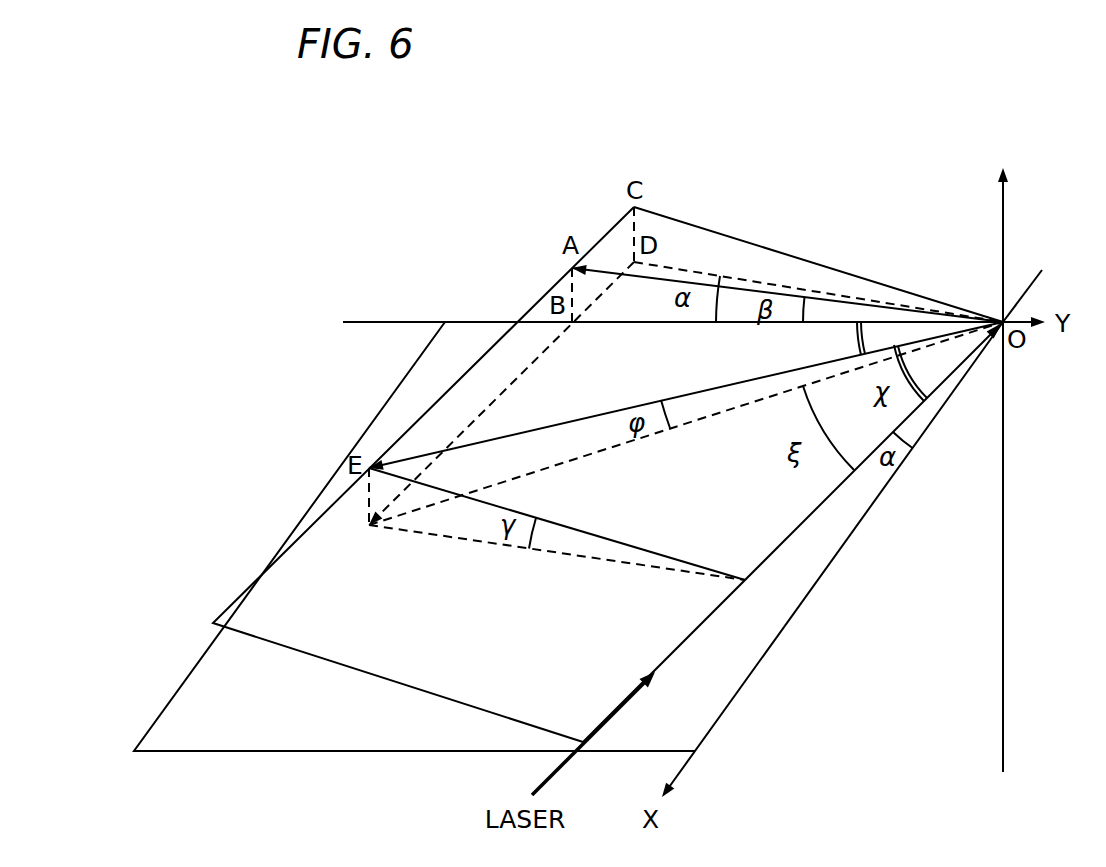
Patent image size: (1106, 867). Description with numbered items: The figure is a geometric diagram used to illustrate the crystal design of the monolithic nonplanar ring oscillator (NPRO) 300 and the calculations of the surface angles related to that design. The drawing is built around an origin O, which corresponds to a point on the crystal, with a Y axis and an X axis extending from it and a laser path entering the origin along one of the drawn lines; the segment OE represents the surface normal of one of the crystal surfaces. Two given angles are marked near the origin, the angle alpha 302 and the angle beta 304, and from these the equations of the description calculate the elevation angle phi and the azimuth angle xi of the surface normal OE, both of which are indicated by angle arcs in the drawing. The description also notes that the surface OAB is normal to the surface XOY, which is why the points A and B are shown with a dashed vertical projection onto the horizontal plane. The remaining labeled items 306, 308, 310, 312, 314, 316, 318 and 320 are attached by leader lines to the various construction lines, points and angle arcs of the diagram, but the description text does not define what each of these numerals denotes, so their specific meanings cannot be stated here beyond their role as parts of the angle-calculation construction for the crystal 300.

The monolithic nonplanar ring oscillator (NPRO) 300 is at (392, 185).
The angle α 302 is at (882, 473).
The angle β 304 is at (780, 307).
The line from point E to laser incidence point 306 is at (492, 532).
The point A on tilted plane 308 is at (558, 243).
The point B projection on Y axis 310 is at (550, 307).
The point C vertex of tilted plane 312 is at (620, 180).
The edge of tilted plane from C to O 314 is at (662, 238).
The incident laser beam line 316 is at (892, 398).
The line from point E to origin O 318 is at (627, 410).
The projected line from point F to origin O 320 is at (780, 463).